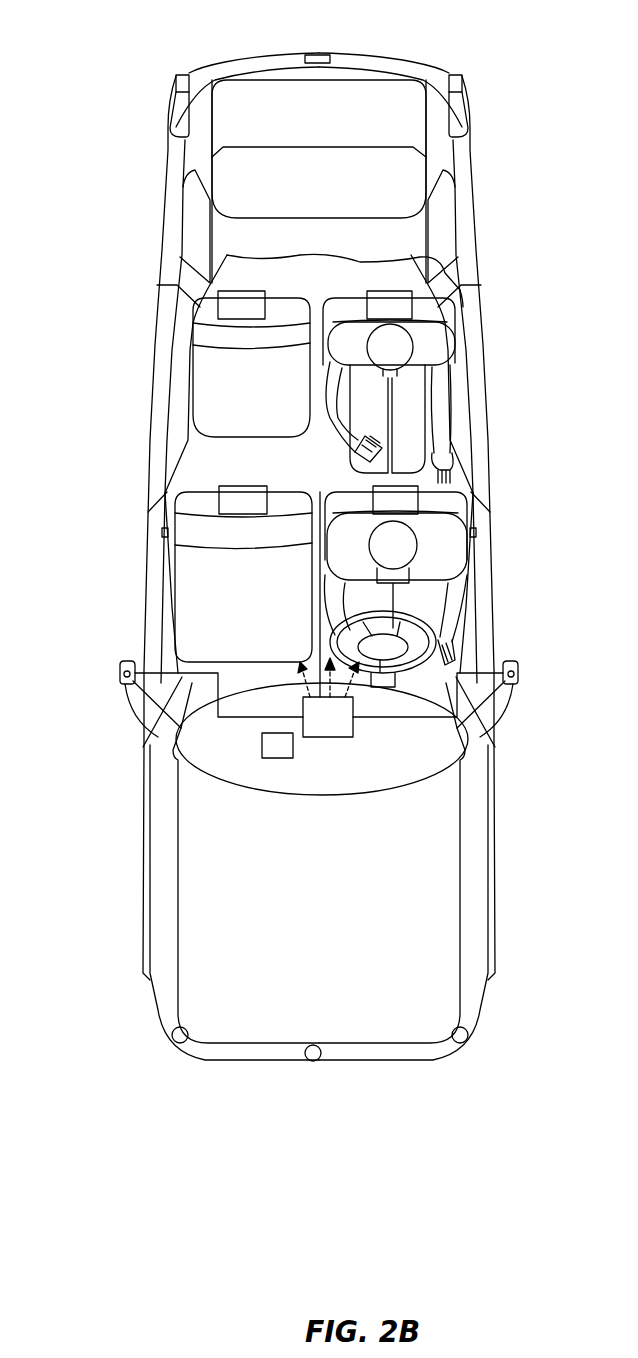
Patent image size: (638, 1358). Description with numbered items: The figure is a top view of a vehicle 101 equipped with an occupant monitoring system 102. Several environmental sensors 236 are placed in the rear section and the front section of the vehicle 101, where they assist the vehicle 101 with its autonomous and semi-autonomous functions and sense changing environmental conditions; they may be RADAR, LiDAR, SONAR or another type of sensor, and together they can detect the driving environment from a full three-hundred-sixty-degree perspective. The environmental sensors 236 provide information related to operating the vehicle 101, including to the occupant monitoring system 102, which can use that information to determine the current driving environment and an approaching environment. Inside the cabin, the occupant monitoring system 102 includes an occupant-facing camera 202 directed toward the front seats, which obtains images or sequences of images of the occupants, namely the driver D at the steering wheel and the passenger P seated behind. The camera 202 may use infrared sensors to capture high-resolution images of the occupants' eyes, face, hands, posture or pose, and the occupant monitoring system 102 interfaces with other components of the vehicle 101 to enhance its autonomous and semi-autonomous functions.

The vehicle 101 is at (296, 556).
The occupant monitoring system 102 is at (270, 753).
The occupant-facing camera 202 is at (323, 732).
The environmental sensors 236 is at (318, 55).
The passenger P is at (442, 330).
The driver D is at (452, 558).